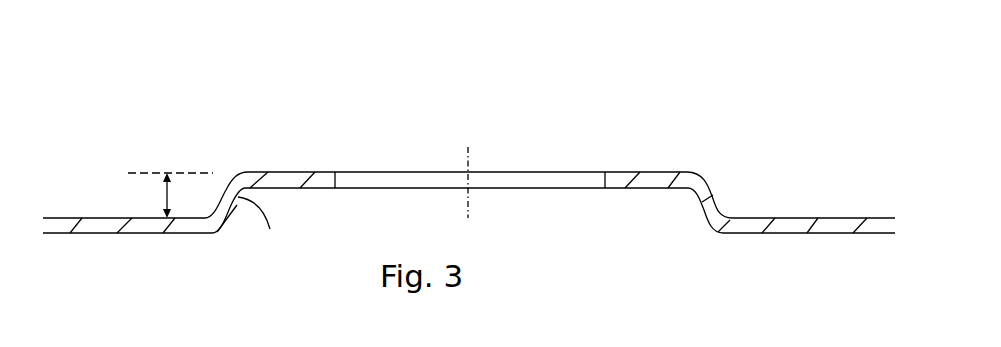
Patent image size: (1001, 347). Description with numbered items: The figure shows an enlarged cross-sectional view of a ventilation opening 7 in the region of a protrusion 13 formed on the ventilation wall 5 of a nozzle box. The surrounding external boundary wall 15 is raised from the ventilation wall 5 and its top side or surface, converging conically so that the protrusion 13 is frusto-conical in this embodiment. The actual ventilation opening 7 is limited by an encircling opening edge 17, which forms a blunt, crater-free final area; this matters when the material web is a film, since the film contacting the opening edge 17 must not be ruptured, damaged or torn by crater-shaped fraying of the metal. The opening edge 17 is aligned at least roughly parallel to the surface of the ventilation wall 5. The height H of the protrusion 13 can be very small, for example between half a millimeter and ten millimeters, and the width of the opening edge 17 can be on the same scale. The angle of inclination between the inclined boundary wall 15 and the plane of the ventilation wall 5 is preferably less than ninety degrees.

The ventilation wall 5 is at (469, 159).
The ventilation opening 7 is at (403, 173).
The protrusion 13 is at (214, 156).
The external boundary wall 15 is at (714, 196).
The encircling opening edge 17 is at (295, 160).
The height of the protrusion H is at (150, 194).